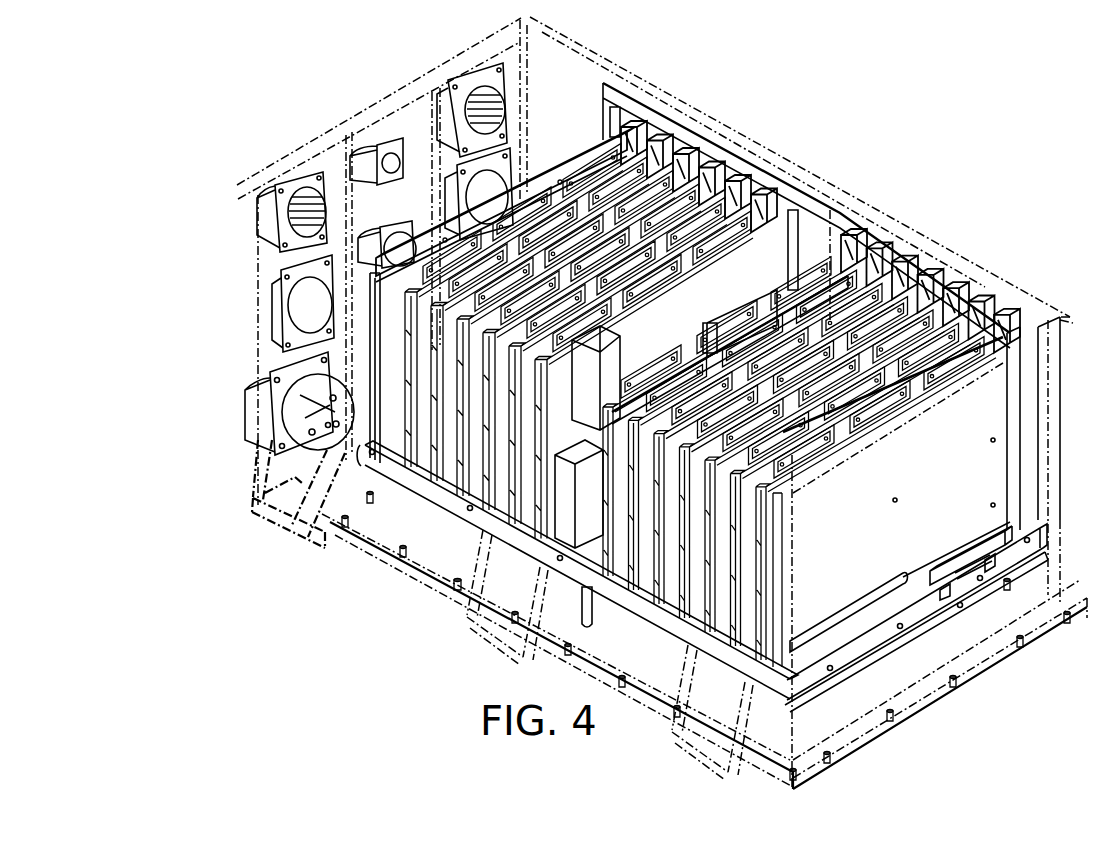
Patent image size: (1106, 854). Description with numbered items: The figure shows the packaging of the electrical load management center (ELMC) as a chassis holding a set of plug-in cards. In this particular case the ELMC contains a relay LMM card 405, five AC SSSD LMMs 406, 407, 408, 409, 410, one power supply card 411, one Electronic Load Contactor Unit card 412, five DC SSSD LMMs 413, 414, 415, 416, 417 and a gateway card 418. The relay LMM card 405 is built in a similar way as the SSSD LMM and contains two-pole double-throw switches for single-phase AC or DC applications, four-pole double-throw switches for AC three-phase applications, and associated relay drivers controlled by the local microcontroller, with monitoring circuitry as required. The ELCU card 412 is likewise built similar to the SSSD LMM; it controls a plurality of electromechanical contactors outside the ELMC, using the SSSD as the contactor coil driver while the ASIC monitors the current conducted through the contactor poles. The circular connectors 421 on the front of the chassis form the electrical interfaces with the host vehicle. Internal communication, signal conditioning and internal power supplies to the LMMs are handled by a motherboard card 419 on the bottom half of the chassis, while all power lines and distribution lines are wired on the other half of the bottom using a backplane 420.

The relay LMM card 405 is at (560, 167).
The AC SSSD LMM 406 is at (633, 160).
The AC SSSD LMM 407 is at (653, 180).
The AC SSSD LMM 408 is at (687, 213).
The AC SSSD LMM 409 is at (720, 220).
The AC SSSD LMM 410 is at (753, 232).
The power supply card 411 is at (767, 240).
The Electronic Load Contactor Unit (ELCU) card 412 is at (847, 263).
The DC SSSD LMM 413 is at (873, 287).
The DC SSSD LMM 414 is at (900, 307).
The DC SSSD LMM 415 is at (927, 320).
The DC SSSD LMM 416 is at (950, 340).
The DC SSSD LMM 417 is at (973, 347).
The gateway card 418 is at (990, 358).
The motherboard card 419 is at (977, 590).
The backplane 420 is at (880, 655).
The circular connectors 421 is at (243, 397).